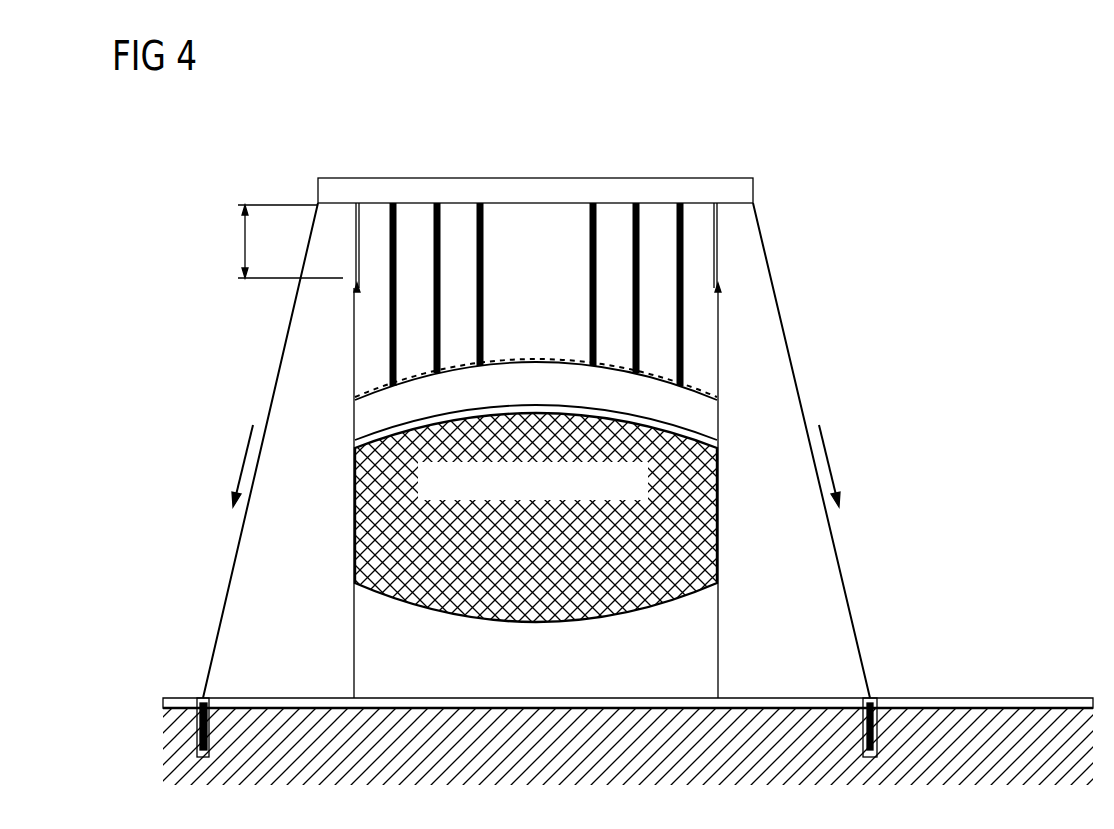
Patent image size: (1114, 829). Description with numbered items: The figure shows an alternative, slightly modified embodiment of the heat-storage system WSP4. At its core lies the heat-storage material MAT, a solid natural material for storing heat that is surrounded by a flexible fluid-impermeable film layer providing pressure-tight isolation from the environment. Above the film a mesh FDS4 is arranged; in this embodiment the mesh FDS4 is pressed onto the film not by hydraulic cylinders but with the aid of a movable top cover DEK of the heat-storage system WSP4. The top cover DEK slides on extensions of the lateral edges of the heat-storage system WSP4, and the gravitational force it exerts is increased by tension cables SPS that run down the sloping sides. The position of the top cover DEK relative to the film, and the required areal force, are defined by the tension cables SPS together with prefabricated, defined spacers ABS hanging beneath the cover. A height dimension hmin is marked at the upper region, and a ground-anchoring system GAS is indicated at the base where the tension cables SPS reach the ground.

The heat-storage system WSP4 is at (535, 385).
The movable top cover DEK is at (406, 177).
The tension cables SPS is at (218, 606).
The spacers ABS is at (484, 244).
The mesh FDS4 is at (536, 371).
The heat-storage material MAT is at (536, 517).
The minimum height h_min (h stop) hmin is at (272, 266).
The ground-anchoring system GAS is at (628, 741).